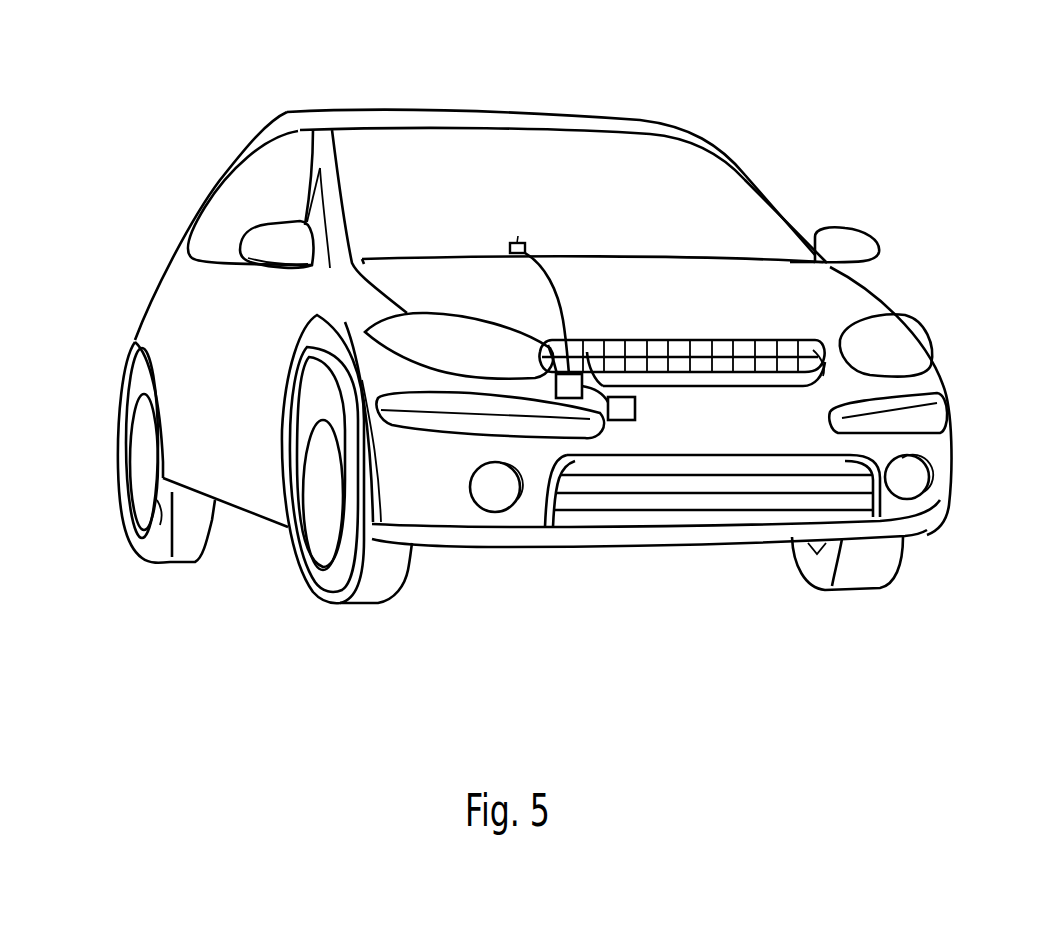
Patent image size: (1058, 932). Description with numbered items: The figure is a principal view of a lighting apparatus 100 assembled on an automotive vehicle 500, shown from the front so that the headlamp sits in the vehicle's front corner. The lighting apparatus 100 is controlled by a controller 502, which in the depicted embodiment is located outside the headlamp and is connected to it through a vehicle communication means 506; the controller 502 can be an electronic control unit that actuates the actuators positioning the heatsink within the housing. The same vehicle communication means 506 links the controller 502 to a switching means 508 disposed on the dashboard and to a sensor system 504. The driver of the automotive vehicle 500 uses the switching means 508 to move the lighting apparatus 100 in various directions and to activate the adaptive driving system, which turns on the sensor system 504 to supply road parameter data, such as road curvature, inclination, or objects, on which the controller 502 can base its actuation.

The automotive vehicle 500 is at (139, 131).
The lighting apparatus 100 is at (354, 330).
The controller 502 is at (540, 391).
The sensor system 504 is at (594, 413).
The vehicle communication means 506 is at (606, 371).
The switching means 508 is at (520, 220).